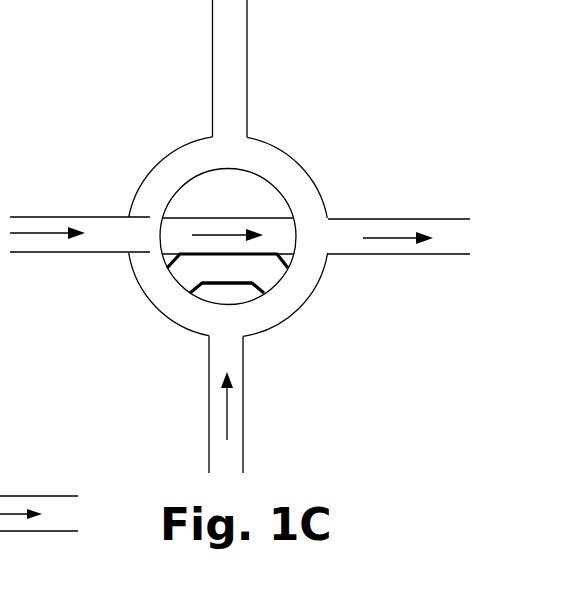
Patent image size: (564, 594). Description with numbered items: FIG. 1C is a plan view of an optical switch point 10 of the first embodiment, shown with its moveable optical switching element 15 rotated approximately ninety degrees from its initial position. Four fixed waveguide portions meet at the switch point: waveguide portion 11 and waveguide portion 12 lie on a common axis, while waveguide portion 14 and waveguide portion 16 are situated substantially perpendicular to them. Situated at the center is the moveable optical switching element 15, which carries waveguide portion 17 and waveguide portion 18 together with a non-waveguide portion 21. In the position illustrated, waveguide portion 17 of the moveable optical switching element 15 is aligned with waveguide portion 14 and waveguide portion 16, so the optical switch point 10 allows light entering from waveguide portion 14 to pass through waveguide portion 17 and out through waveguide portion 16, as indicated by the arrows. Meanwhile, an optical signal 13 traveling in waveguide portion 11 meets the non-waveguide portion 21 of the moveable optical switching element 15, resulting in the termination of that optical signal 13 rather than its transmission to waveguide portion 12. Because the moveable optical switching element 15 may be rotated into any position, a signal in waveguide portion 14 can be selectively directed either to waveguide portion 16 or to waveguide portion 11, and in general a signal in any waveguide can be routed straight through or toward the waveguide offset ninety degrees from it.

The optical switch point 10 is at (118, 40).
The waveguide portion 11 is at (243, 370).
The waveguide portion 12 is at (247, 33).
The optical signal 13 is at (225, 415).
The waveguide portion 14 is at (80, 255).
The moveable optical switching element 15 is at (190, 170).
The waveguide portion 16 is at (363, 254).
The waveguide portion 17 is at (196, 217).
The waveguide portion 18 is at (205, 288).
The non-waveguide portion 21 is at (246, 293).